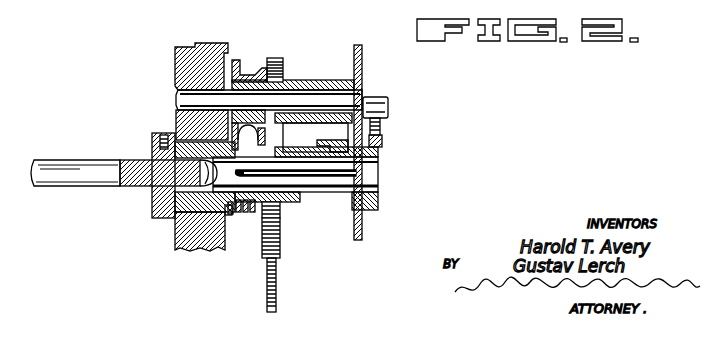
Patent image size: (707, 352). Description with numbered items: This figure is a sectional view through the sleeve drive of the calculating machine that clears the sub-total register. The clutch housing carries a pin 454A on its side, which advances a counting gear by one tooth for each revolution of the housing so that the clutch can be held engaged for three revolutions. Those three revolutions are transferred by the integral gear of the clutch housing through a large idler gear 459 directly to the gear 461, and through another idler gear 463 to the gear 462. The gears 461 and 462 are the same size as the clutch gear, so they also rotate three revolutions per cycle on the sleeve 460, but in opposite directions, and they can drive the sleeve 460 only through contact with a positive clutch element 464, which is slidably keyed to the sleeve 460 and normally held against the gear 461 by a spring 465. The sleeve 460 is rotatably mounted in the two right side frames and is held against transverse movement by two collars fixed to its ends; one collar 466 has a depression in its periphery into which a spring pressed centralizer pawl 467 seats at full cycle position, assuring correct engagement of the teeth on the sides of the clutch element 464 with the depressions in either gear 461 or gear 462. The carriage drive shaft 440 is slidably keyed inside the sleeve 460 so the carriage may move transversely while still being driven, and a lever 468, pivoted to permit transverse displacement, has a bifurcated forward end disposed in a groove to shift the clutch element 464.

The carriage drive shaft 440 is at (85, 178).
The sleeve 460 is at (380, 190).
The idler gear 463 is at (248, 78).
The centralizer pawl 467 is at (385, 135).
The collar 466 is at (384, 146).
The gear 461 is at (282, 214).
The large idler gear 459 is at (282, 242).
The pin 454A is at (278, 285).
The gear 462 is at (230, 215).
The spring 465 is at (240, 212).
The positive clutch element 464 is at (247, 212).
The lever 468 is at (254, 212).